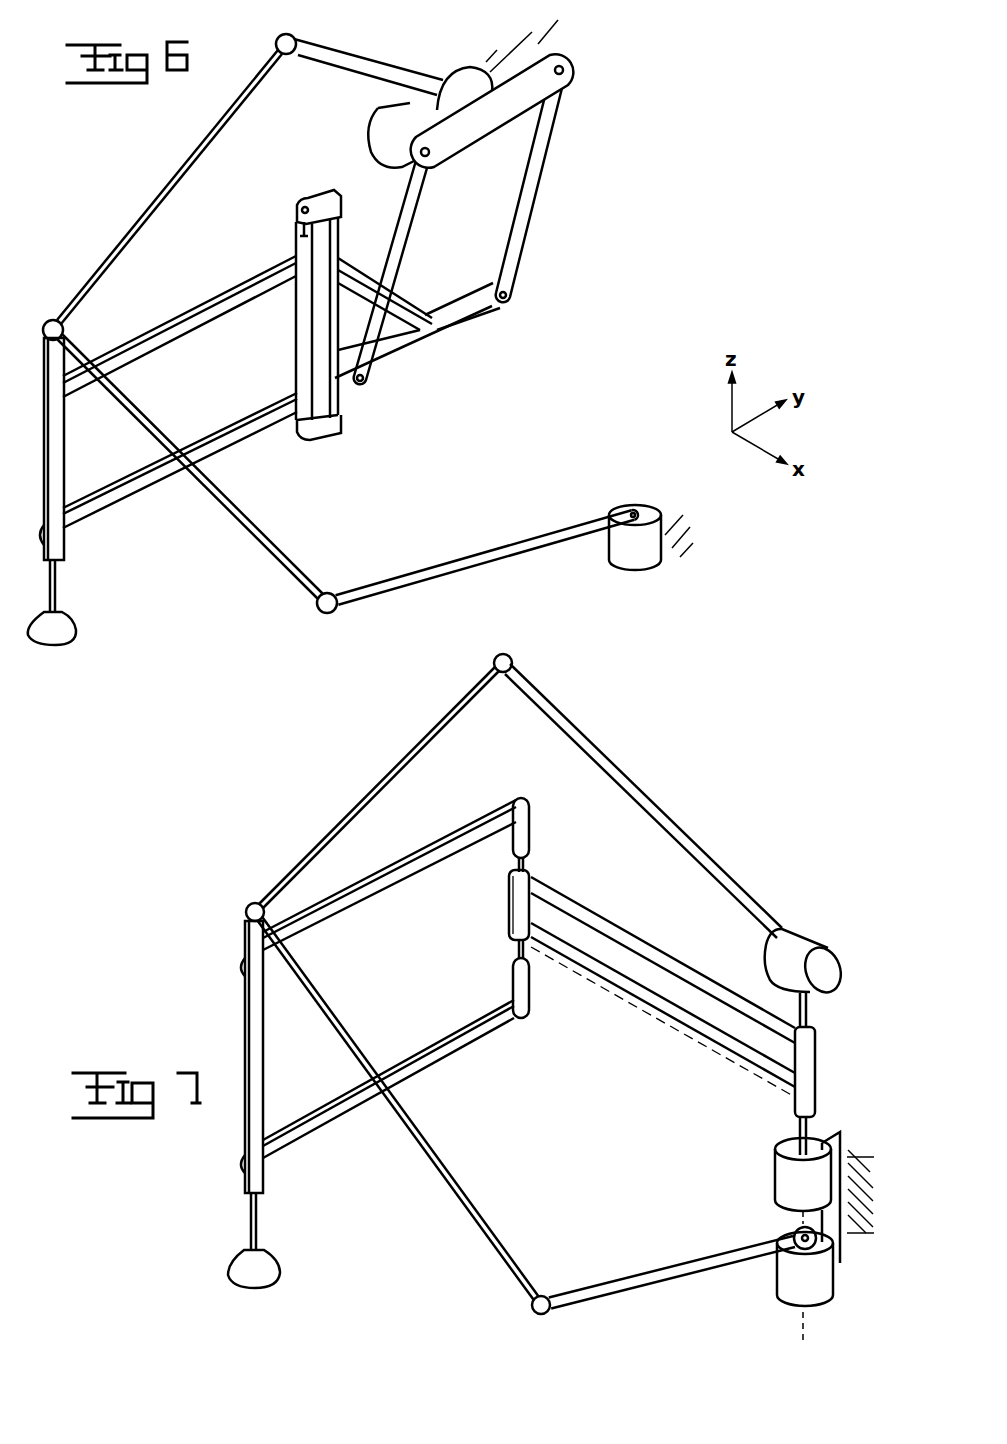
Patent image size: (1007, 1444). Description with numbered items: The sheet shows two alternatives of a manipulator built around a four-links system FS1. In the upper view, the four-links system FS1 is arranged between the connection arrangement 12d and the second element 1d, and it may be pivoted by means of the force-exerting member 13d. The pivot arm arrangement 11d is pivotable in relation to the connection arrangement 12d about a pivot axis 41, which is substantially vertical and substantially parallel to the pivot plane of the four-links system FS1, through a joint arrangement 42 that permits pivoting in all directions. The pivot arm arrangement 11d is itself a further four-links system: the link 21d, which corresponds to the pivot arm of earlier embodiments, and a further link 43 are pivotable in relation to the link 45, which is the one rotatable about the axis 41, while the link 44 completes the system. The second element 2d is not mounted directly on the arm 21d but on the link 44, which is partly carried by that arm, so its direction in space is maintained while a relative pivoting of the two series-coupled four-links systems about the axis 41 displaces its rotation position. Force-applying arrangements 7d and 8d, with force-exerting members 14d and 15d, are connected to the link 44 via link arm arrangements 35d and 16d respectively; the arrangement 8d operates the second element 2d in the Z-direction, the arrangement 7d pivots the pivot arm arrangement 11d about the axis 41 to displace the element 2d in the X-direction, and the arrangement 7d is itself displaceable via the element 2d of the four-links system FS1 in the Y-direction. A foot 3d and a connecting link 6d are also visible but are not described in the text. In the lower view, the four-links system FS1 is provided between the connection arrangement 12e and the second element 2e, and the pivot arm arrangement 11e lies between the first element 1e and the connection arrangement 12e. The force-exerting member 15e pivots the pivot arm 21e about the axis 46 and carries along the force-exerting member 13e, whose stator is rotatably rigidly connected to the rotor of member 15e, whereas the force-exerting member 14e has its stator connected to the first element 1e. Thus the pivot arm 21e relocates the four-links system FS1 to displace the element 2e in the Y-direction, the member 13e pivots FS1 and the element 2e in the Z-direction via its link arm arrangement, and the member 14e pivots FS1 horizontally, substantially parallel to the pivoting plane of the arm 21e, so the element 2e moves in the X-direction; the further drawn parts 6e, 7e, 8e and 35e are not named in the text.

In FIG. 6, the second element 1d is at (484, 128).
In FIG. 6, the second element 2d is at (60, 585).
In FIG. 6, the foot 3d is at (58, 646).
In FIG. 6, the connecting link 6d is at (352, 126).
In FIG. 6, the force-applying arrangement 7d is at (298, 644).
In FIG. 6, the force-applying arrangement 8d is at (253, 160).
In FIG. 6, the pivot arm arrangement 11d is at (263, 420).
In FIG. 6, the connection arrangement 12d is at (323, 350).
In FIG. 6, the force-exerting member 13d is at (392, 138).
In FIG. 6, the force-exerting member 14d is at (650, 547).
In FIG. 6, the force-exerting member 15d is at (462, 85).
In FIG. 6, the link arm arrangement 16d is at (295, 68).
In FIG. 6, the link 21d is at (133, 478).
In FIG. 6, the link arm arrangement 35d is at (425, 610).
In FIG. 6, the pivot axis 41 is at (305, 150).
In FIG. 6, the joint arrangement 42 is at (285, 330).
In FIG. 6, the link 43 is at (200, 322).
In FIG. 6, the link 44 is at (85, 438).
In FIG. 6, the link 45 is at (273, 308).
In FIG. 6, the four-links system FS1 is at (590, 167).
In FIG. 7, the four-links system FS1 is at (450, 1077).
In FIG. 7, the first element 1e is at (843, 1158).
In FIG. 7, the second element 2e is at (170, 1262).
In FIG. 7, the arm 6e is at (757, 840).
In FIG. 7, the diagonal strut 7e is at (440, 1265).
In FIG. 7, the bar 8e is at (690, 1190).
In FIG. 7, the pivot arm arrangement 11e is at (658, 1047).
In FIG. 7, the connection arrangement 12e is at (447, 943).
In FIG. 7, the force-exerting member 13e is at (793, 944).
In FIG. 7, the force-exerting member 14e is at (625, 708).
In FIG. 7, the force-exerting member 15e is at (783, 1177).
In FIG. 7, the pivot arm 21e is at (622, 937).
In FIG. 7, the link bar 35e is at (500, 1270).
In FIG. 7, the axis 46 is at (803, 927).